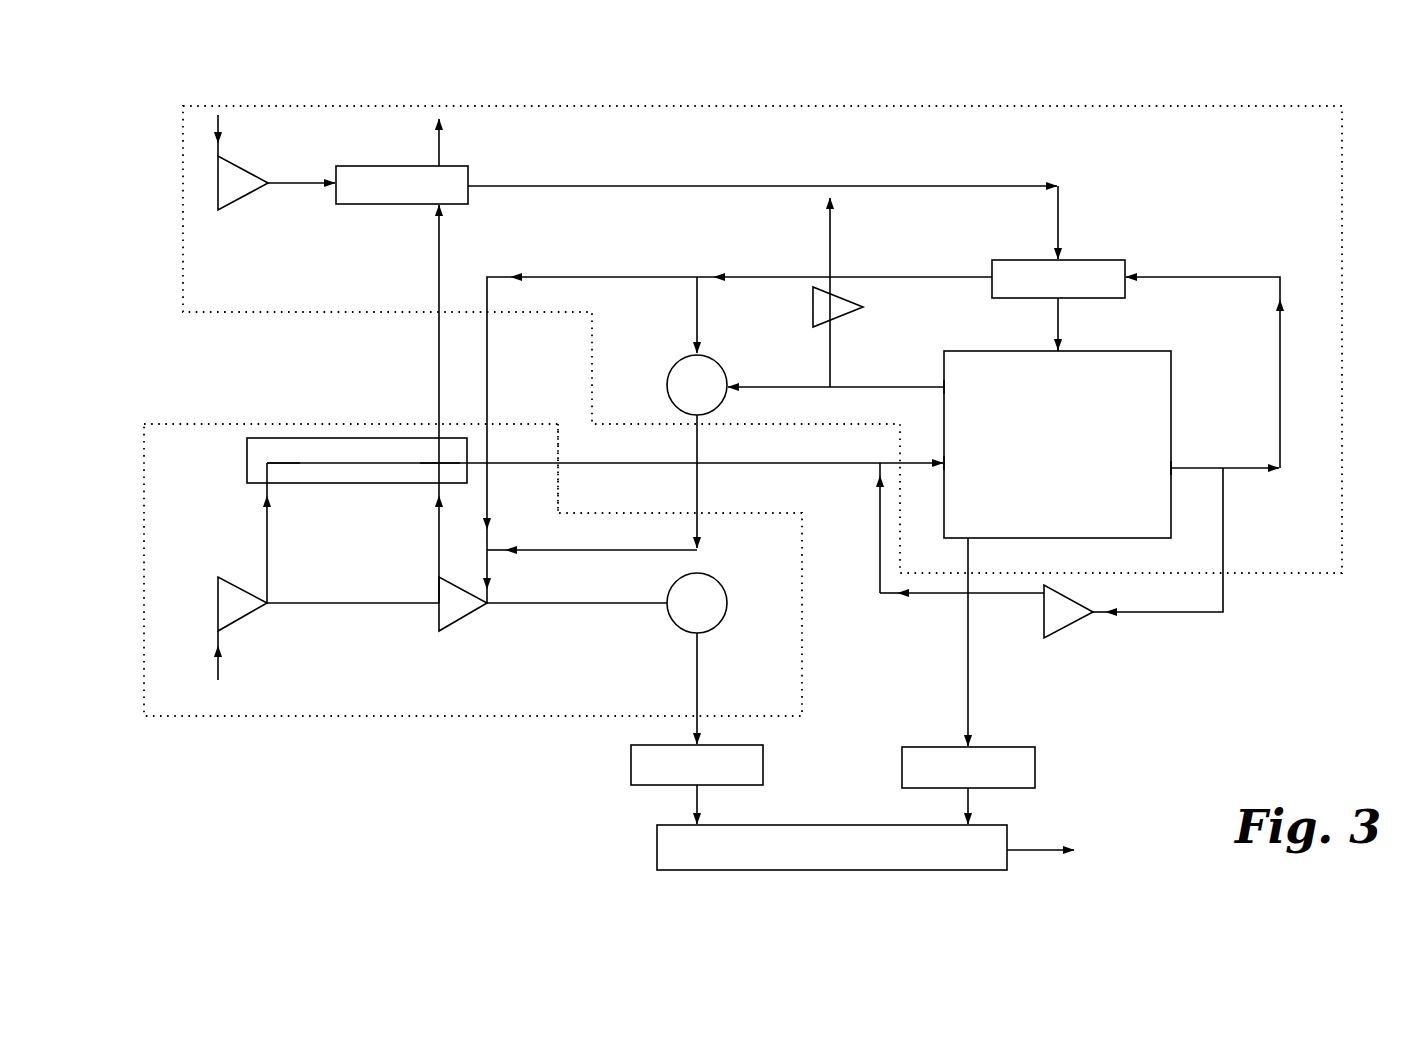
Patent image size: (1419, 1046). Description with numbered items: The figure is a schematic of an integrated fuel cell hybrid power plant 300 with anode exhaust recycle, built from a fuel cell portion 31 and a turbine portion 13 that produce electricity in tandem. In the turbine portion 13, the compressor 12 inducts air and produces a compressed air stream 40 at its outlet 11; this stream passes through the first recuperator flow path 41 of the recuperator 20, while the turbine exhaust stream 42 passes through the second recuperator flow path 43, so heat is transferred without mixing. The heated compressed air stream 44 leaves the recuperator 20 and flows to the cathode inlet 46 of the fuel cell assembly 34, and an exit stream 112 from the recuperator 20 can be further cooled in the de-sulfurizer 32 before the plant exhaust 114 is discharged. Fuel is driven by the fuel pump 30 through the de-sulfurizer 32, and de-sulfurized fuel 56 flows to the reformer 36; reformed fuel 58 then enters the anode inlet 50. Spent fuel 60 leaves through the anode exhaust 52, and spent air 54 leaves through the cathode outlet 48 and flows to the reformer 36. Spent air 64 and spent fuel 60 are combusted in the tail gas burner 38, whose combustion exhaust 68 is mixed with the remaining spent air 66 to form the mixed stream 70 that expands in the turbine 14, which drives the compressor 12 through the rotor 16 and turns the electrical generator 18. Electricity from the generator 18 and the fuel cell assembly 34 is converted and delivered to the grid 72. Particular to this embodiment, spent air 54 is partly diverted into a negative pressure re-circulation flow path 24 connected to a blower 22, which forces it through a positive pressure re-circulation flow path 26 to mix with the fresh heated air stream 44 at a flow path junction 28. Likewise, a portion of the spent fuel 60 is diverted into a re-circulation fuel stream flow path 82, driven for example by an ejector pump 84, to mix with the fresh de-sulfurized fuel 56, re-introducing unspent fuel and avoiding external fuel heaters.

The integrated fuel cell hybrid power plant 300 is at (236, 85).
The fuel cell portion 31 is at (1313, 190).
The turbine portion 13 is at (360, 694).
The heated compressed air stream 44 is at (538, 460).
The fuel pump 30 is at (232, 184).
The de-sulfurizer 32 is at (402, 196).
The exhaust 114 is at (437, 152).
The exit stream 112 is at (440, 258).
The de-sulfurized fuel 56 is at (632, 186).
The fuel reformer 36 is at (1110, 271).
The reformed fuel 58 is at (1060, 317).
The fuel cell assembly 34 is at (1152, 398).
The anode inlet 50 is at (1060, 352).
The anode exhaust 52 is at (945, 377).
The cathode inlet 46 is at (945, 469).
The cathode outlet 48 is at (1171, 471).
The cathode exhaust stream 54 is at (1190, 467).
The remaining spent air 66 is at (488, 318).
The mixed stream 70 is at (490, 570).
The spent air 64 is at (695, 303).
The tail gas burner 38 is at (712, 368).
The re-circulation fuel stream flow path 82 is at (828, 249).
The ejector pump 84 is at (835, 313).
The spent fuel 60 is at (912, 387).
The combustion exhaust 68 is at (700, 508).
The recuperator 20 is at (345, 443).
The first recuperator flow path 41 is at (290, 460).
The second recuperator flow path 43 is at (436, 462).
The compressed air stream 40 is at (265, 530).
The turbine exhaust stream 42 is at (437, 546).
The compressor outlet 11 is at (263, 602).
The compressor 12 is at (236, 610).
The rotor 16 is at (340, 606).
The turbine 14 is at (450, 618).
The electrical generator 18 is at (710, 602).
The flow path junction 28 is at (878, 468).
The positive pressure re-circulation flow path 26 is at (903, 595).
The blower 22 is at (1052, 622).
The negative pressure re-circulation flow path 24 is at (1180, 612).
The grid 72 is at (962, 862).